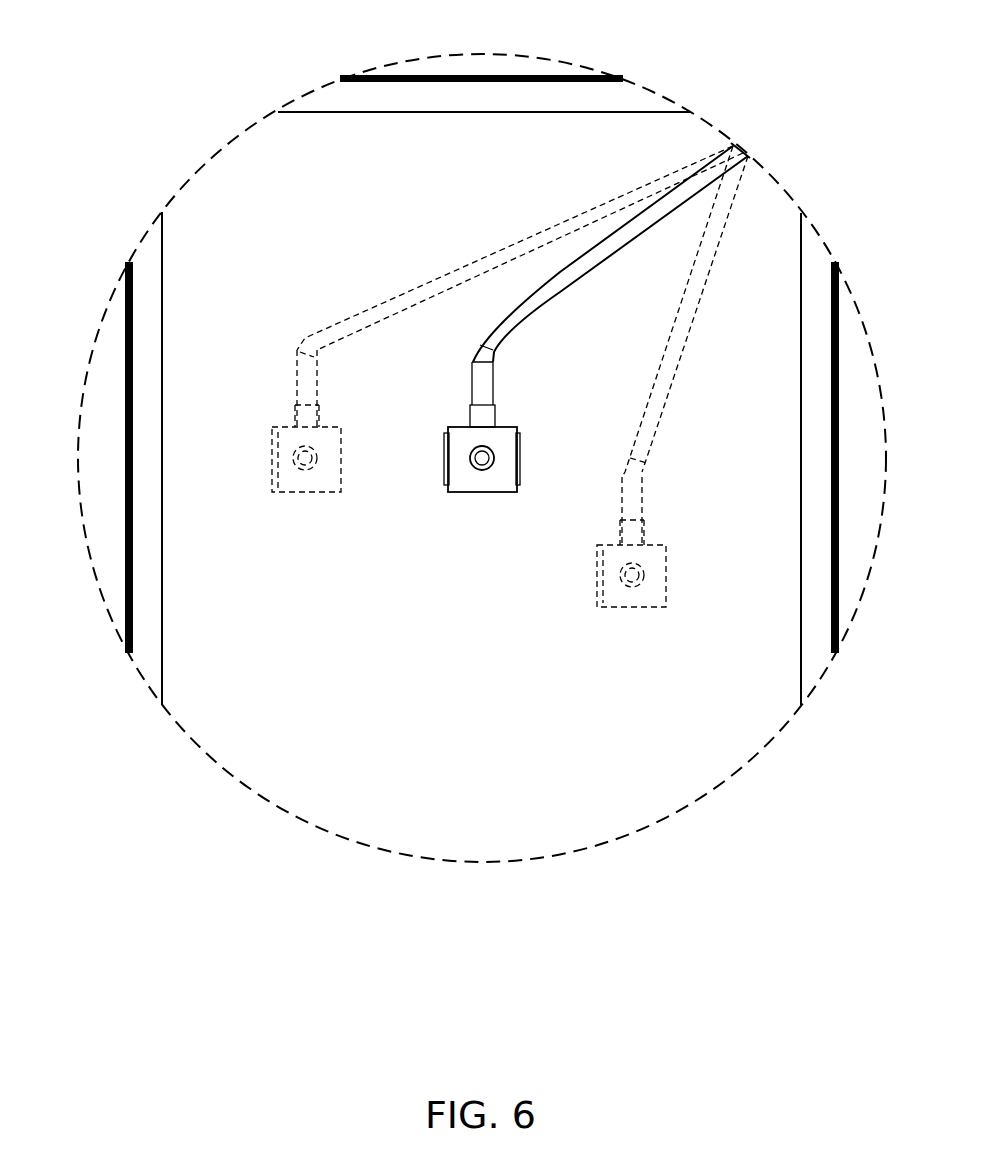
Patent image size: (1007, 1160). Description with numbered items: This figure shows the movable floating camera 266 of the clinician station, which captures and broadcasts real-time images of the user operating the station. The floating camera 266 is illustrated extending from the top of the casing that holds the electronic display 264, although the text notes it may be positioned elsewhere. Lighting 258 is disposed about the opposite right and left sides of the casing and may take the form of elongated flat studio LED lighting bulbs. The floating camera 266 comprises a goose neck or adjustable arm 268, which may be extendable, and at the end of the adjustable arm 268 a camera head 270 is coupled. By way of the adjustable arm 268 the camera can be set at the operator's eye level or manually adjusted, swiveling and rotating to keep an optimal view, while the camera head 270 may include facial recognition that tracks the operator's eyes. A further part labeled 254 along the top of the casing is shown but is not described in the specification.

The top wall/edge of housing 254 is at (567, 100).
The lighting 258 is at (123, 566).
The electronic display 264 is at (481, 408).
The floating camera 266 is at (668, 168).
The adjustable arm 268 is at (560, 222).
The camera head 270 is at (311, 494).